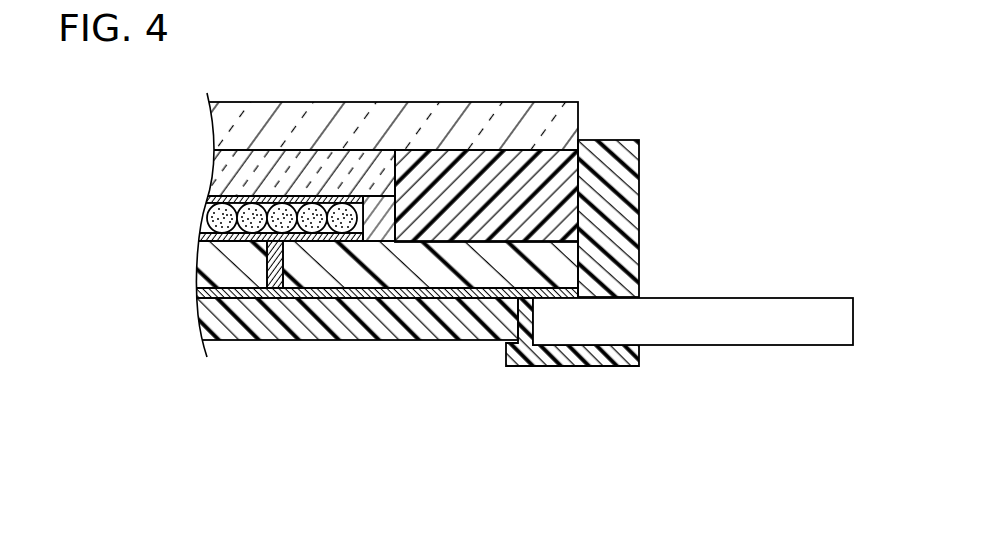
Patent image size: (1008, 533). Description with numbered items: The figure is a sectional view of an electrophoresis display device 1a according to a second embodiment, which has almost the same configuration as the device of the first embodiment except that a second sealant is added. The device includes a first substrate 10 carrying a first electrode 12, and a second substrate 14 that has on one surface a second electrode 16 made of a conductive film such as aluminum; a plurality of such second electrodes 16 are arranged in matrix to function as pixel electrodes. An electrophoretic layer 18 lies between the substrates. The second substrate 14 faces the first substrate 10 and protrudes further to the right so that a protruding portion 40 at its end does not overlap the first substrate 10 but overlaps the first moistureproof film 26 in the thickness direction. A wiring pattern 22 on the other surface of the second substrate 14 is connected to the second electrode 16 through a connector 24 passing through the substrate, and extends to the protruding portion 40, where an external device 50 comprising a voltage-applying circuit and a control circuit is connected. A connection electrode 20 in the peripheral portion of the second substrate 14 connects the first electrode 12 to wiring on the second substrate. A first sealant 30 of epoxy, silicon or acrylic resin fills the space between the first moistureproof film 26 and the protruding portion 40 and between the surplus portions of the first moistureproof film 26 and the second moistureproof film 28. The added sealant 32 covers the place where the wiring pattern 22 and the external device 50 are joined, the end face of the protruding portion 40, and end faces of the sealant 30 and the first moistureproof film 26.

The electrophoresis display device 1a is at (462, 485).
The first substrate 10 is at (220, 173).
The first electrode 12 is at (210, 198).
The second substrate 14 is at (208, 257).
The second electrode 16 is at (200, 236).
The electrophoretic layer 18 is at (208, 216).
The connection electrode 20 is at (376, 203).
The wiring pattern 22 is at (338, 296).
The connector 24 is at (266, 272).
The first moistureproof film 26 is at (573, 128).
The second moistureproof film 28 is at (197, 320).
The sealant 30 is at (512, 160).
The sealant 32 is at (639, 181).
The protruding portion 40 is at (476, 290).
The external device 50 is at (808, 298).